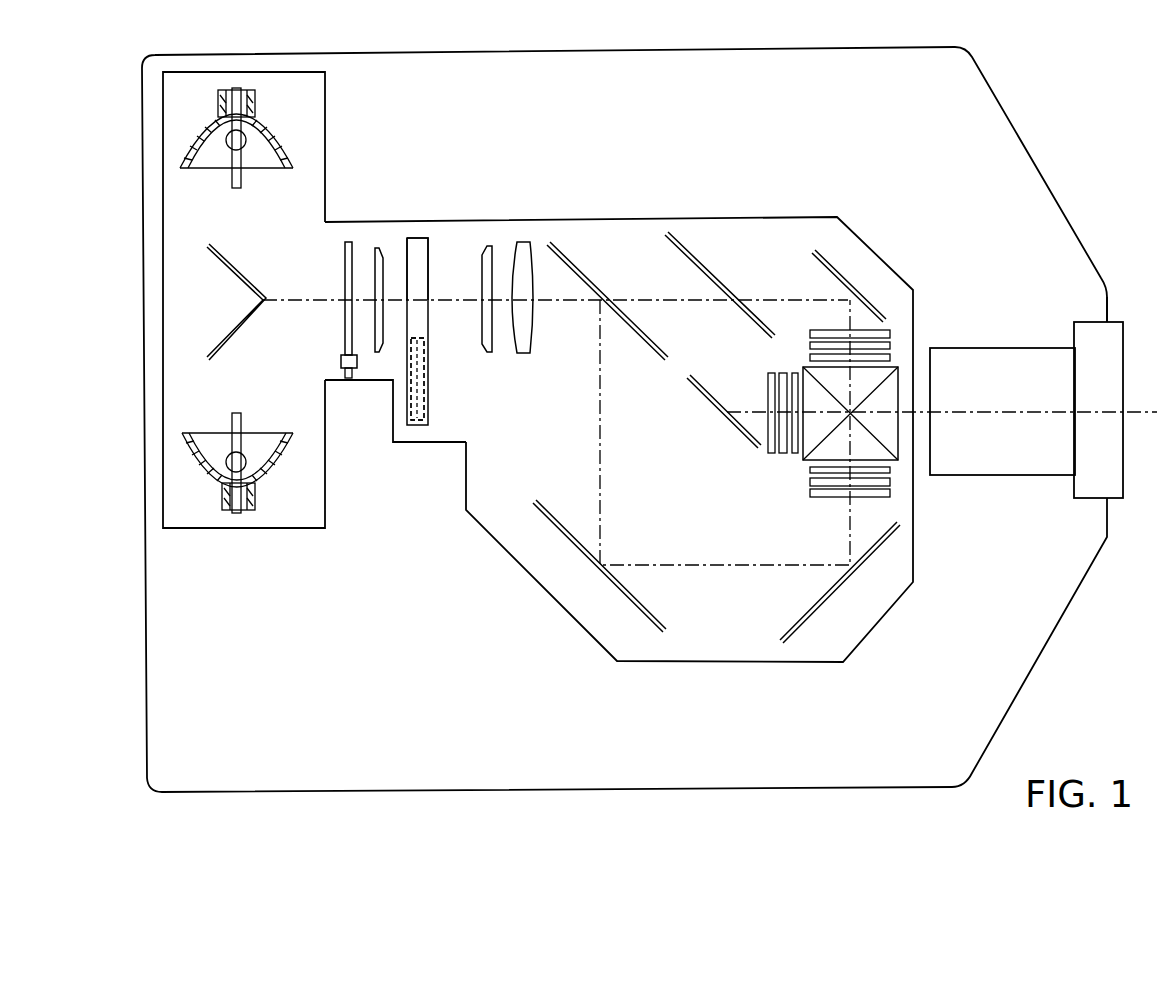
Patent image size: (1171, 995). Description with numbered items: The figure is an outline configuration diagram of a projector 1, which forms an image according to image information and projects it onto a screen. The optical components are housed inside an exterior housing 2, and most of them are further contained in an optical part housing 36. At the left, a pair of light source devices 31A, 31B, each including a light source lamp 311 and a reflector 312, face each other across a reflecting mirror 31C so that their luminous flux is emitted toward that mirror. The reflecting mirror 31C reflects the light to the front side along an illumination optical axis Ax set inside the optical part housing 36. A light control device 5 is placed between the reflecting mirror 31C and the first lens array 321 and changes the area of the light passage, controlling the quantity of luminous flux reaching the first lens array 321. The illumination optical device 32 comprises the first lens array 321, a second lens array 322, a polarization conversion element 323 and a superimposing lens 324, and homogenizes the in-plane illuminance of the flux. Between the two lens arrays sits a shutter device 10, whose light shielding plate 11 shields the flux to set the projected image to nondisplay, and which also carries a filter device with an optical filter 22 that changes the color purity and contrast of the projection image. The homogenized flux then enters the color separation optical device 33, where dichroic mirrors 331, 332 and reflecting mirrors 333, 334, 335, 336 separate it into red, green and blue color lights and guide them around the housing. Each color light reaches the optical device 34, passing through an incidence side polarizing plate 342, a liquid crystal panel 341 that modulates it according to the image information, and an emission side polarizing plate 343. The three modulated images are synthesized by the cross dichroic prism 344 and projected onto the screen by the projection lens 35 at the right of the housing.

The projector 1 is at (1108, 100).
The exterior housing 2 is at (980, 62).
The light control device 5 is at (340, 363).
The shutter device 10 is at (415, 428).
The light shielding plate 11 is at (405, 388).
The optical filter 22 is at (428, 383).
The light source device 31A is at (390, 478).
The light source device 31B is at (390, 72).
The reflecting mirror 31C is at (237, 333).
The light source lamp 311 is at (246, 100).
The reflector 312 is at (270, 128).
The illumination optical device 32 is at (552, 184).
The first lens array 321 is at (378, 247).
The second lens array 322 is at (428, 238).
The polarization conversion element 323 is at (486, 245).
The superimposing lens 324 is at (526, 242).
The color separation optical device 33 is at (775, 237).
The dichroic mirror 331 is at (575, 265).
The dichroic mirror 332 is at (702, 268).
The reflecting mirror 333 is at (546, 513).
The reflecting mirror 334 is at (800, 622).
The reflecting mirror 335 is at (702, 390).
The reflecting mirror 336 is at (826, 258).
The optical device 34 is at (897, 317).
The liquid crystal panel 341 is at (893, 343).
The incidence side polarizing plate 342 is at (770, 372).
The emission side polarizing plate 343 is at (893, 355).
The cross dichroic prism 344 is at (890, 402).
The projection lens 35 is at (1040, 348).
The optical part housing 36 is at (683, 663).
The illumination optical axis Ax is at (570, 302).